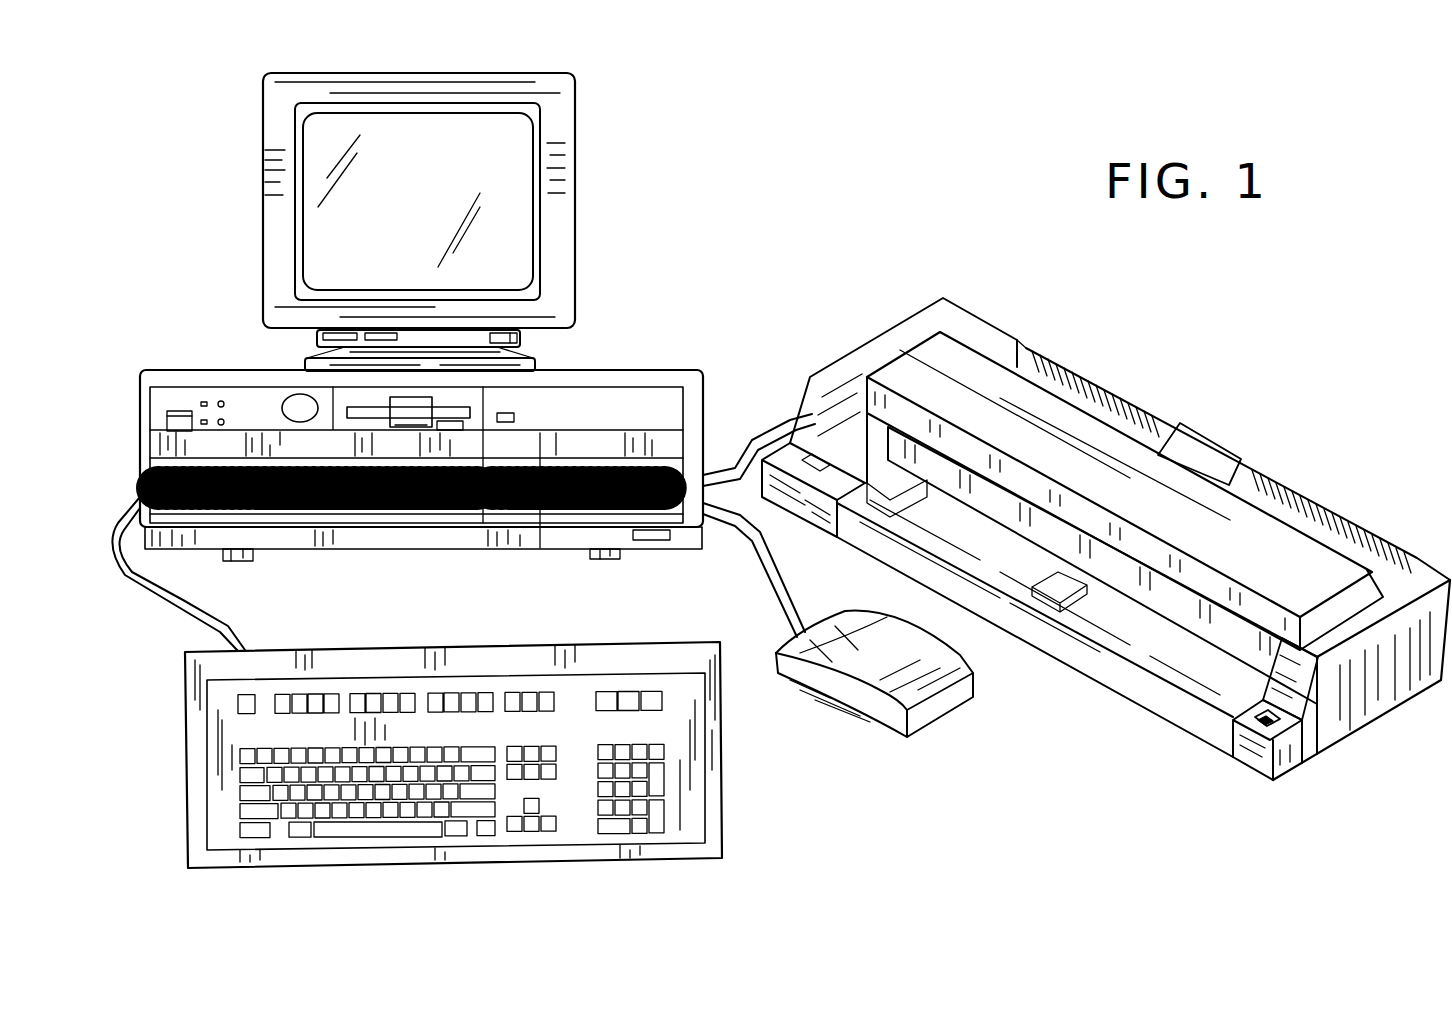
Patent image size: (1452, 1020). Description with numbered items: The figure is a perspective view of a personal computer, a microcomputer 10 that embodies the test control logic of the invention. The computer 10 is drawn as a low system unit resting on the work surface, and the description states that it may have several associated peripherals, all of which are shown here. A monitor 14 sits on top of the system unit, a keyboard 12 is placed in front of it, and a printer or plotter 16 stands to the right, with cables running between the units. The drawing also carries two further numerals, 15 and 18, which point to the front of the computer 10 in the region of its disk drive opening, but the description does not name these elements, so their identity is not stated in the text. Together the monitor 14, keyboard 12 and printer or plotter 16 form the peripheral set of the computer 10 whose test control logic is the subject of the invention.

The microcomputer 10 is at (663, 360).
The keyboard 12 is at (491, 633).
The monitor 14 is at (580, 158).
The diskette 15 is at (405, 410).
The printer or plotter 16 is at (987, 301).
The disk drive 18 is at (357, 397).